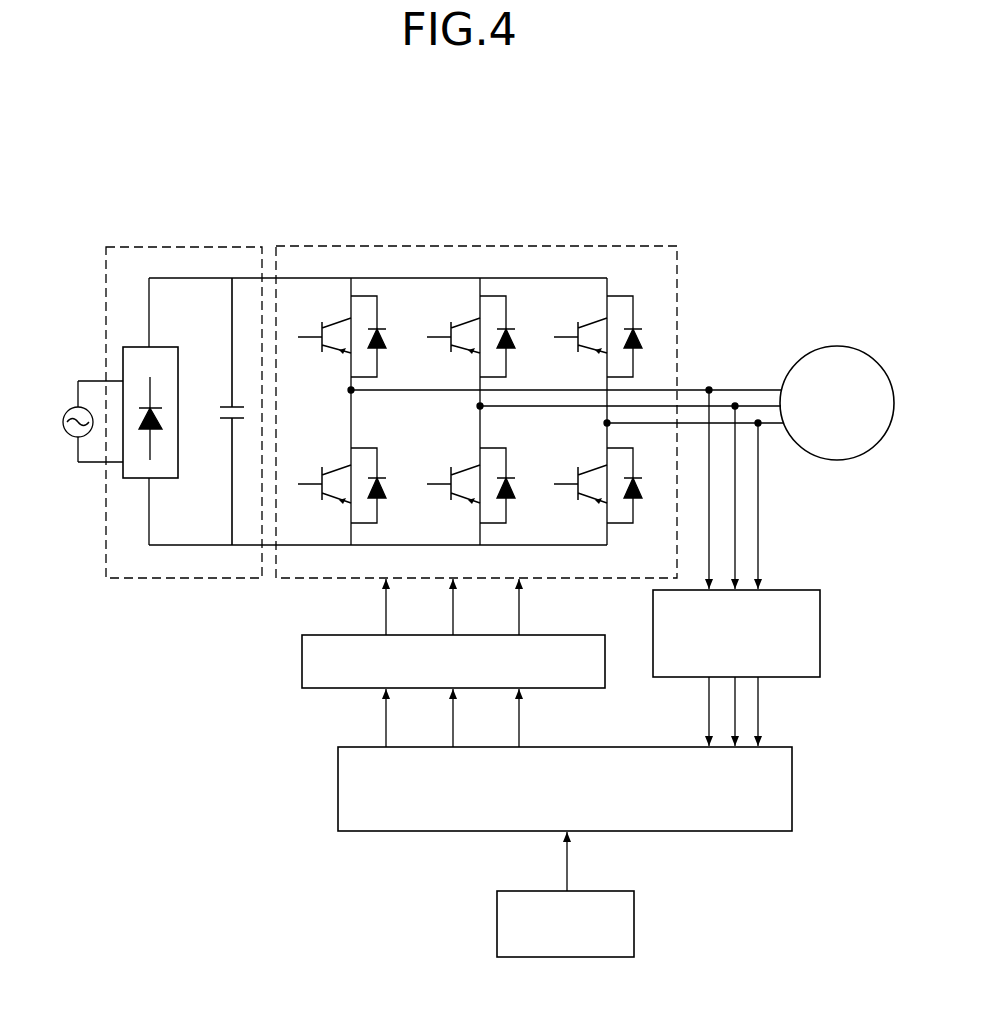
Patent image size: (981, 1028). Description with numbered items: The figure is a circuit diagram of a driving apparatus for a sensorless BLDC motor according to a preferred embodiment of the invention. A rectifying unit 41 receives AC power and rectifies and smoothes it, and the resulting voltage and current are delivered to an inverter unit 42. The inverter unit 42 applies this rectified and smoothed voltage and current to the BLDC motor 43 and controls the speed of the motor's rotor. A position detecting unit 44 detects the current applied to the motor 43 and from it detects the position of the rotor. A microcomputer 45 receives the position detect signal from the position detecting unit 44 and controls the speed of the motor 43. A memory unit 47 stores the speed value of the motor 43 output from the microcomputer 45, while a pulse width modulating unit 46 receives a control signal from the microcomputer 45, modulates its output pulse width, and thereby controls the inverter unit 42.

The rectifying unit 41 is at (107, 522).
The inverter unit 42 is at (677, 278).
The BLDC motor 43 is at (833, 345).
The position detecting unit 44 is at (820, 630).
The microcomputer 45 is at (792, 785).
The pulse width modulating unit 46 is at (302, 660).
The memory unit 47 is at (634, 915).